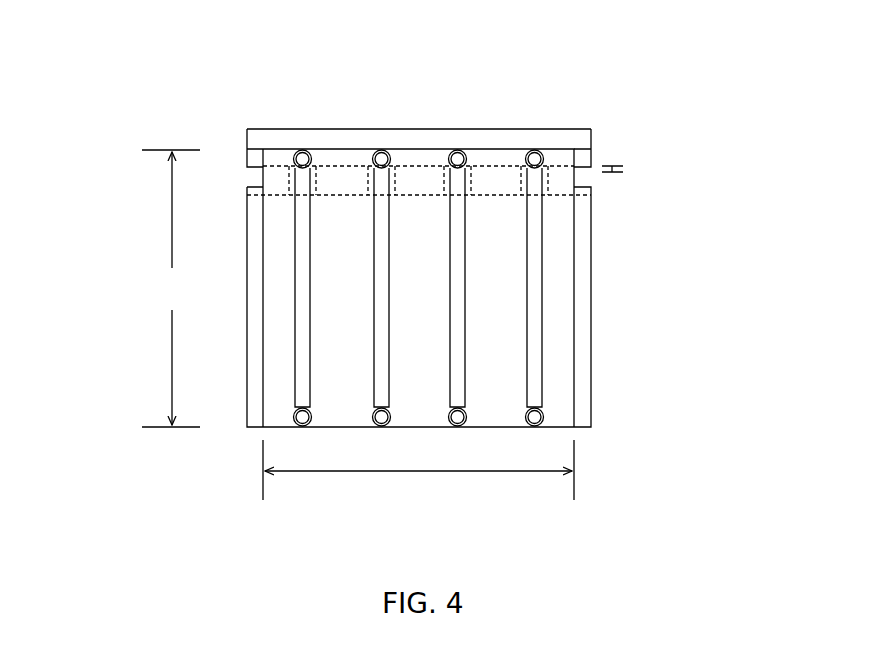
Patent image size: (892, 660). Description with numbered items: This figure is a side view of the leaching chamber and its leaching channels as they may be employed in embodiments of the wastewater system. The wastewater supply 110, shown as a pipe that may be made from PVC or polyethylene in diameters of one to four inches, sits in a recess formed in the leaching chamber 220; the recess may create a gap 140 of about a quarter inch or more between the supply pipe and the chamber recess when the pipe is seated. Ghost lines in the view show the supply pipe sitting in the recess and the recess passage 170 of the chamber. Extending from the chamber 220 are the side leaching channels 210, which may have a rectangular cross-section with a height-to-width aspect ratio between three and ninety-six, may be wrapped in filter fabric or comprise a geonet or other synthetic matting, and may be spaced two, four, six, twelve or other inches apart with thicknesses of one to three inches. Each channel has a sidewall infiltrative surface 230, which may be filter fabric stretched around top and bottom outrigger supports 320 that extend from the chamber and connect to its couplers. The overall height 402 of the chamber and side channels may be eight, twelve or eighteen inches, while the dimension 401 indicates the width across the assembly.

The wastewater supply 110 is at (409, 126).
The gap 140 is at (617, 165).
The recess passage 170 is at (265, 180).
The leaching channels 210 is at (470, 262).
The leaching chamber 220 is at (560, 350).
The leaching channel sidewall infiltrative surface 230 is at (542, 307).
The outrigger supports 320 is at (534, 158).
The width dimension 401 is at (418, 470).
The heights 402 is at (171, 288).